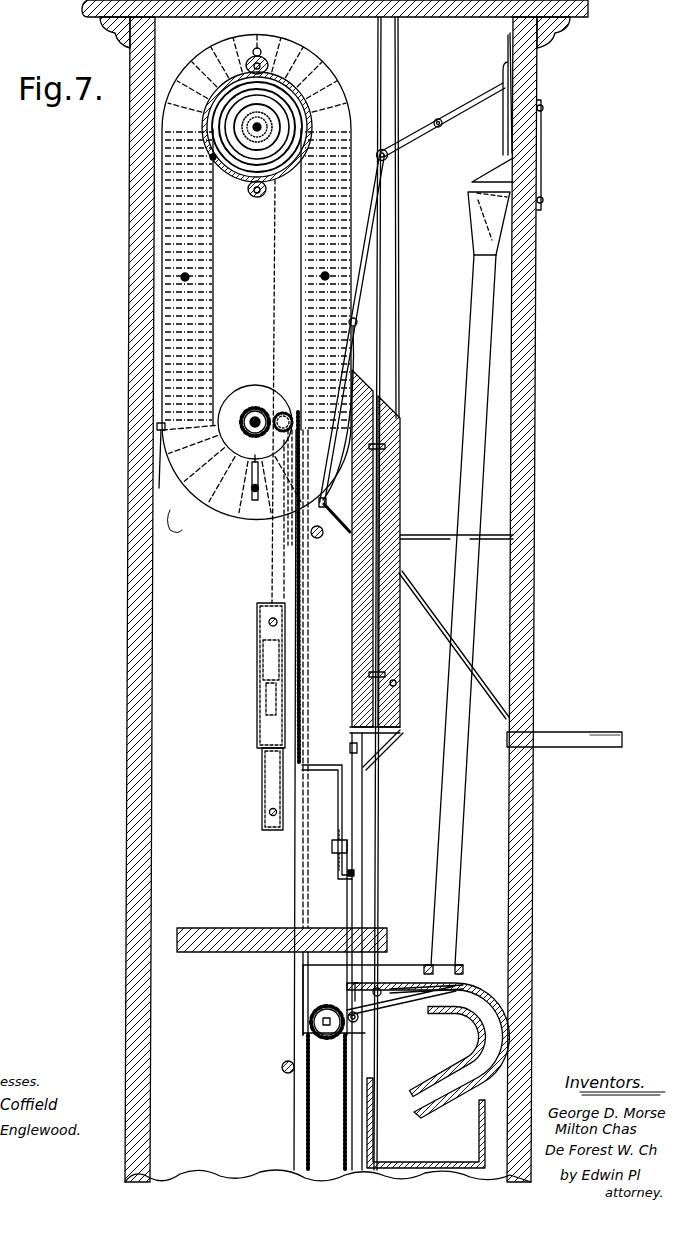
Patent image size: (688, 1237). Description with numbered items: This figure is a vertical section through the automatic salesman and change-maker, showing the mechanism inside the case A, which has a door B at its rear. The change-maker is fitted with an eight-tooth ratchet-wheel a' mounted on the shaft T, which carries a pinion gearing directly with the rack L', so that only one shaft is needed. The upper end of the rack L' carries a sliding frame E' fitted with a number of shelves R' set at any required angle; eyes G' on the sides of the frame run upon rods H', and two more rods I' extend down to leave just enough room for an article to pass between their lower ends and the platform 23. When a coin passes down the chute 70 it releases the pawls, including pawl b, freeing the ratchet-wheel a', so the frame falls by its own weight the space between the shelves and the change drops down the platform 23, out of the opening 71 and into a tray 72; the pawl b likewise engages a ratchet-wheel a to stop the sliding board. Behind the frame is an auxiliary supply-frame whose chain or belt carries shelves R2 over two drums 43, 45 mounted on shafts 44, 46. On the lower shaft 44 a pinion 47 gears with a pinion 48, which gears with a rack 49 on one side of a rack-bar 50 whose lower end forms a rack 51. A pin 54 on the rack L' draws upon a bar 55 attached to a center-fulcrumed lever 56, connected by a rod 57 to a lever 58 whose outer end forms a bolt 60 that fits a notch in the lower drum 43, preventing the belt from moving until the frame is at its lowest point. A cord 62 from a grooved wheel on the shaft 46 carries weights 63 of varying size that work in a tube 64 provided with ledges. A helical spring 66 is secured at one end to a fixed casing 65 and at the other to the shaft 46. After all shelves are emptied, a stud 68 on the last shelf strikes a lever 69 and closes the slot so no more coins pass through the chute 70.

The fixed casing 65 is at (298, 100).
The helical spring 66 is at (315, 120).
The drum 45 is at (245, 163).
The shaft 46 is at (262, 142).
The cord 62 is at (273, 282).
The lower drum 43 is at (235, 395).
The lower shaft 44 is at (256, 415).
The pinion 48 is at (283, 410).
The pinion 47 is at (252, 430).
The bolt 60 is at (257, 470).
The stud 68 is at (253, 276).
The shelves R2 is at (192, 533).
The lever 58 is at (290, 485).
The rack 49 is at (286, 520).
The rack-bar 50 is at (306, 588).
The lever 69 is at (415, 283).
The rods H' is at (402, 593).
The rods I' is at (406, 217).
The shelves R' is at (379, 570).
The eyes G' is at (402, 560).
The sliding frame E' is at (408, 685).
The platform 23 is at (414, 591).
The opening 71 is at (536, 738).
The tray 72 is at (592, 748).
The chute 70 is at (455, 872).
The weights 63 is at (262, 641).
The tube 64 is at (262, 736).
The rod 57 is at (307, 716).
The pin 54 is at (350, 746).
The lever 56 is at (339, 768).
The bar 55 is at (338, 822).
The rack L' is at (332, 951).
The rack 51 is at (308, 1100).
The shaft T is at (320, 1017).
The ratchet-wheel a' is at (298, 1022).
The ratchet-wheel a is at (401, 991).
The pawl b is at (350, 1012).
The door B is at (128, 577).
The case A is at (520, 608).